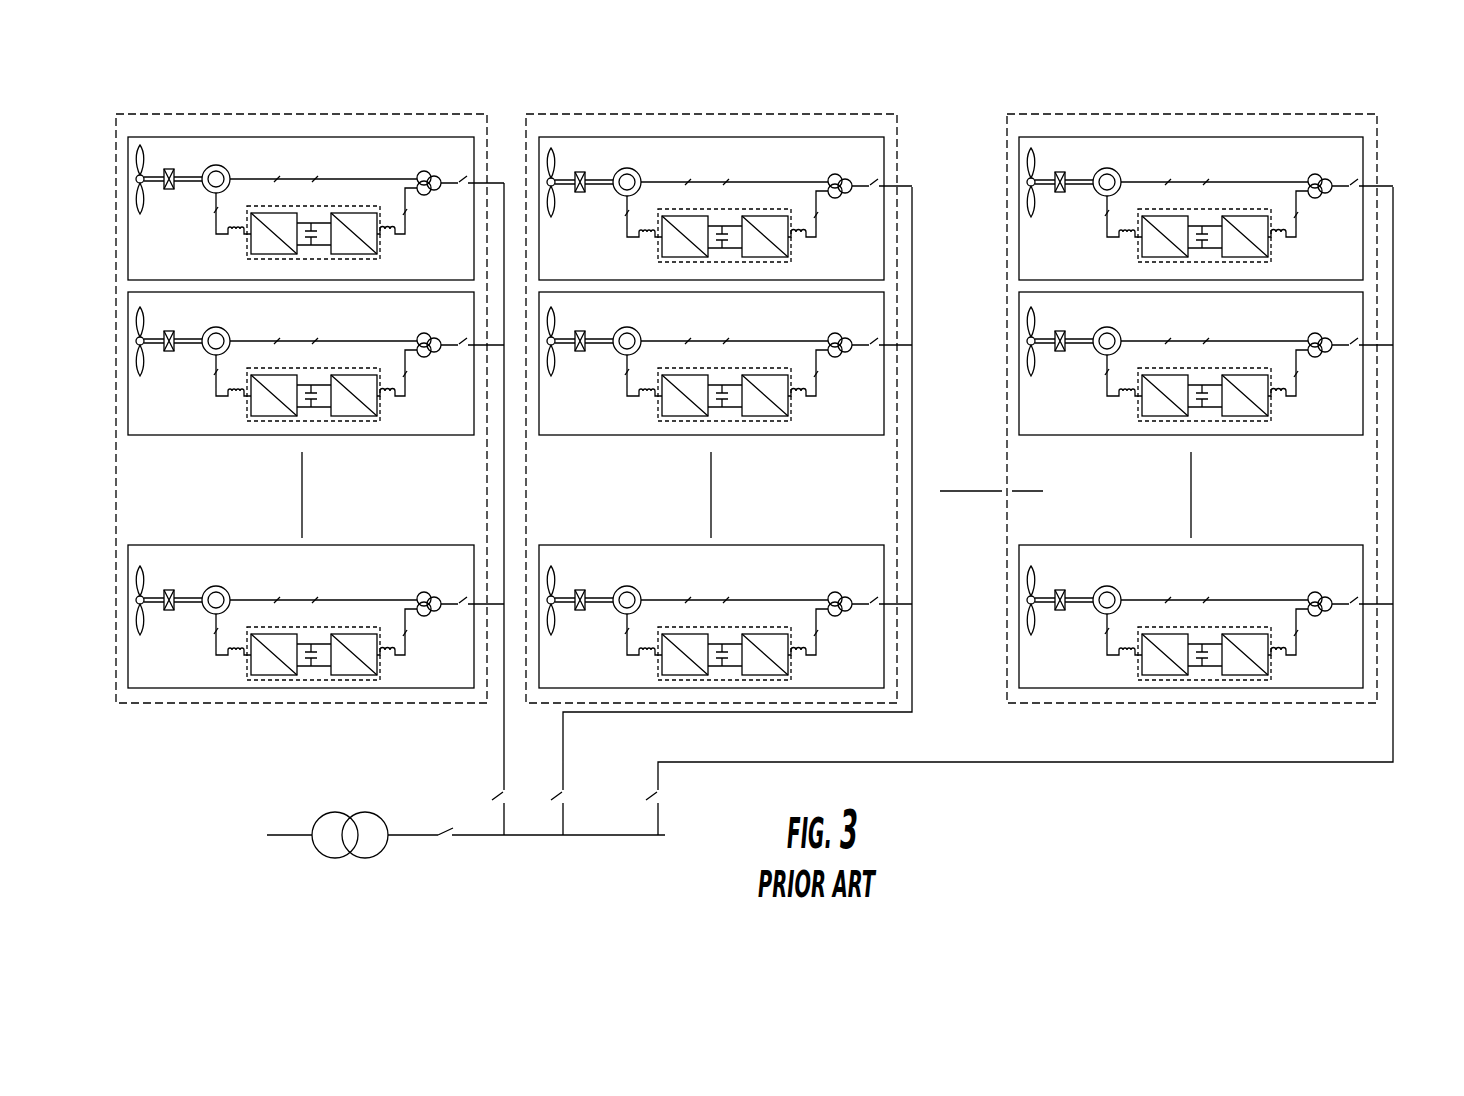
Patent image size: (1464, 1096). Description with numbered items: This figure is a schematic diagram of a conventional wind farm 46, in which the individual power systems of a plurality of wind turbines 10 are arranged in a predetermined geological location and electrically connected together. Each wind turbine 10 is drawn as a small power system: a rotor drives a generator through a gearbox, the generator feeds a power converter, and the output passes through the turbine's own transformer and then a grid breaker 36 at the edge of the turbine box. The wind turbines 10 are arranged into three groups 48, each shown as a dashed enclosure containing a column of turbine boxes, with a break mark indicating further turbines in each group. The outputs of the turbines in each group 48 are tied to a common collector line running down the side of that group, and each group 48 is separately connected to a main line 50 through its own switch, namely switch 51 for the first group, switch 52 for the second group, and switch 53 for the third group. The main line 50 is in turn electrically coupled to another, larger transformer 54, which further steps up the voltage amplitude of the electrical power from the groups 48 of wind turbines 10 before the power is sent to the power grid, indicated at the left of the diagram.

The wind turbine 10 is at (128, 228).
The grid breaker 36 is at (456, 170).
The wind farm 46 is at (1417, 134).
The group 48 is at (190, 703).
The main line 50 is at (630, 838).
The switch 51 is at (488, 796).
The switch 52 is at (549, 796).
The switch 53 is at (641, 796).
The transformer 54 is at (350, 805).